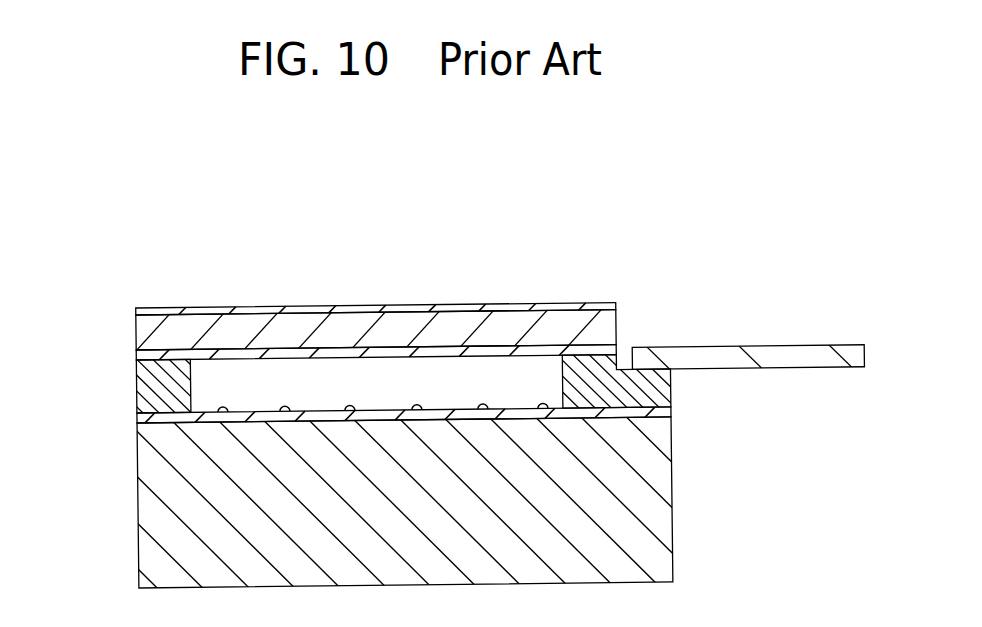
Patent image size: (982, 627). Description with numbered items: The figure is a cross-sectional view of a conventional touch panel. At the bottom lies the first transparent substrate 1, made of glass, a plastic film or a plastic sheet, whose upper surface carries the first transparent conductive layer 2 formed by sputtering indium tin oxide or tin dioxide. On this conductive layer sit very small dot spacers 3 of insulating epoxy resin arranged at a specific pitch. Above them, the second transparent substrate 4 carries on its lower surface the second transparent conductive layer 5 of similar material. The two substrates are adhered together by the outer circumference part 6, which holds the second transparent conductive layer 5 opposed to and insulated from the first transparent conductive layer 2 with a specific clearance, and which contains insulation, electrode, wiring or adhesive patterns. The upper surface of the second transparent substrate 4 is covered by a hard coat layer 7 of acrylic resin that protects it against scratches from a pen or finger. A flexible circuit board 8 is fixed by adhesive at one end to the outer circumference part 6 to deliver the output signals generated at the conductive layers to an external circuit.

The first transparent substrate 1 is at (150, 472).
The first transparent conductive layer 2 is at (137, 417).
The dot spacers 3 is at (352, 405).
The second transparent substrate 4 is at (255, 330).
The second transparent conductive layer 5 is at (310, 350).
The outer circumference part 6 is at (140, 372).
The hard coat layer 7 is at (173, 312).
The flexible circuit board 8 is at (817, 362).